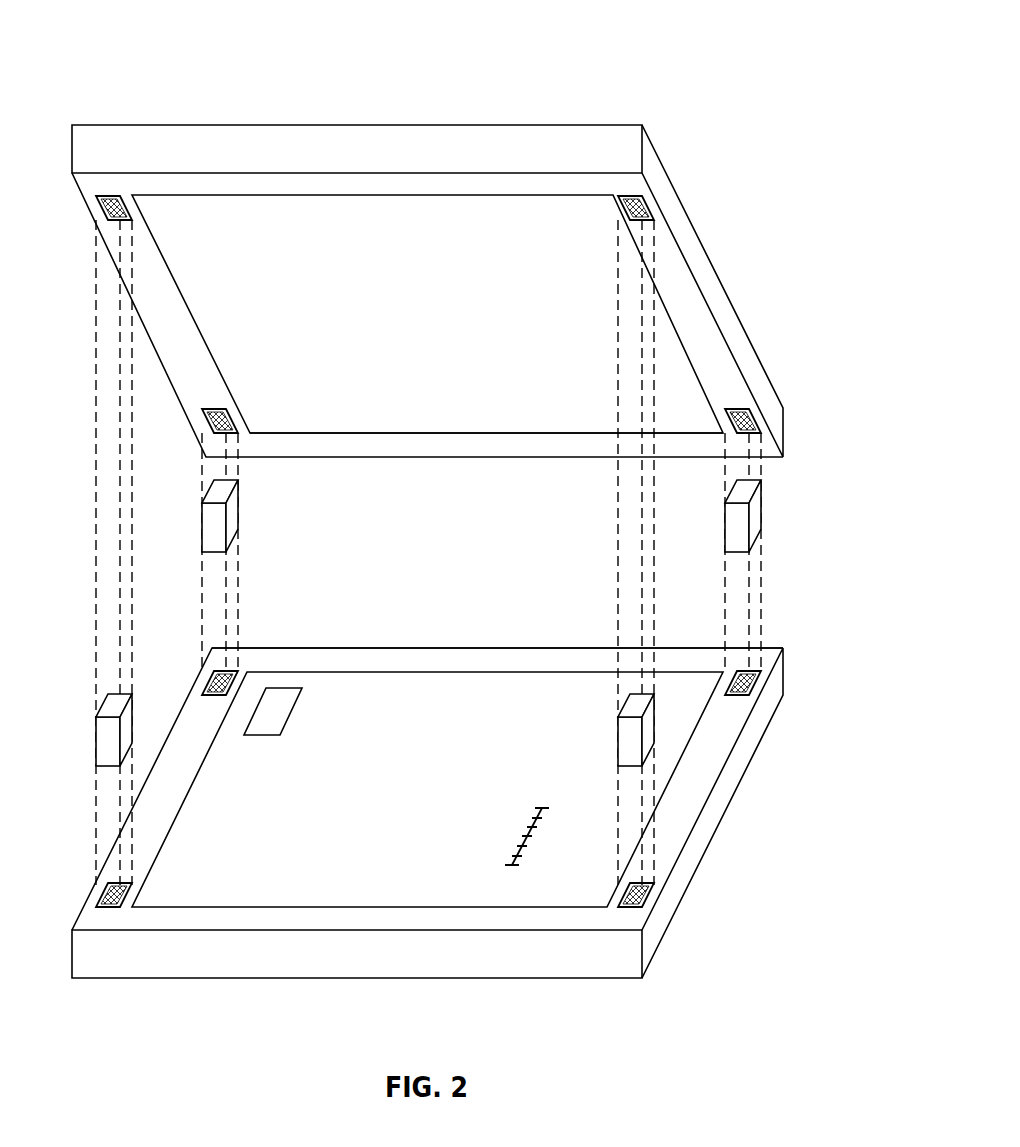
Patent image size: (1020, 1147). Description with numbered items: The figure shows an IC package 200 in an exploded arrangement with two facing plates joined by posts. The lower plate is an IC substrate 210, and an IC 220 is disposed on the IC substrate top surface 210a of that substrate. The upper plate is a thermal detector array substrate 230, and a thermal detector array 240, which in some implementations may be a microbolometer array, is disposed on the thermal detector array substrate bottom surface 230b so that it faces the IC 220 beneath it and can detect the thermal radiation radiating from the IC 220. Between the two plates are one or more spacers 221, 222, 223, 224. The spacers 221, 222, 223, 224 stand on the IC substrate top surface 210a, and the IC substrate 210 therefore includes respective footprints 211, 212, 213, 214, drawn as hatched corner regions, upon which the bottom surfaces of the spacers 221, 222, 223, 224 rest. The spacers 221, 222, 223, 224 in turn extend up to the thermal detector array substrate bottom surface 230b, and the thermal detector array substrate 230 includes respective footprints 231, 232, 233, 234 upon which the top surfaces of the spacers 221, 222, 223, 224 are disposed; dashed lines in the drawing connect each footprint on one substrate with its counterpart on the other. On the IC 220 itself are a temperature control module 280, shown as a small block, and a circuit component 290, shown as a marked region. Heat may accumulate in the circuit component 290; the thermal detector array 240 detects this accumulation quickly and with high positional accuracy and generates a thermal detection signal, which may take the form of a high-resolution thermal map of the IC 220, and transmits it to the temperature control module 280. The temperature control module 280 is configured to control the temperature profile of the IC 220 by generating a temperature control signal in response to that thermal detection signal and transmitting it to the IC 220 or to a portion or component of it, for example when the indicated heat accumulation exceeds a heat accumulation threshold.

The IC package 200 is at (672, 76).
The IC substrate 210 is at (719, 812).
The IC substrate top surface 210a is at (440, 655).
The footprint 211 is at (207, 685).
The footprint 212 is at (754, 683).
The footprint 213 is at (98, 894).
The footprint 214 is at (650, 896).
The IC 220 is at (441, 798).
The spacer 221 is at (233, 517).
The spacer 222 is at (756, 517).
The spacer 223 is at (124, 730).
The spacer 224 is at (647, 729).
The thermal detector array substrate 230 is at (725, 305).
The thermal detector array substrate bottom surface 230b is at (440, 450).
The footprint 231 is at (229, 422).
The footprint 232 is at (760, 426).
The footprint 233 is at (127, 207).
The footprint 234 is at (645, 207).
The thermal detector array 240 is at (439, 323).
The temperature control module 280 is at (287, 730).
The circuit component 290 is at (526, 832).